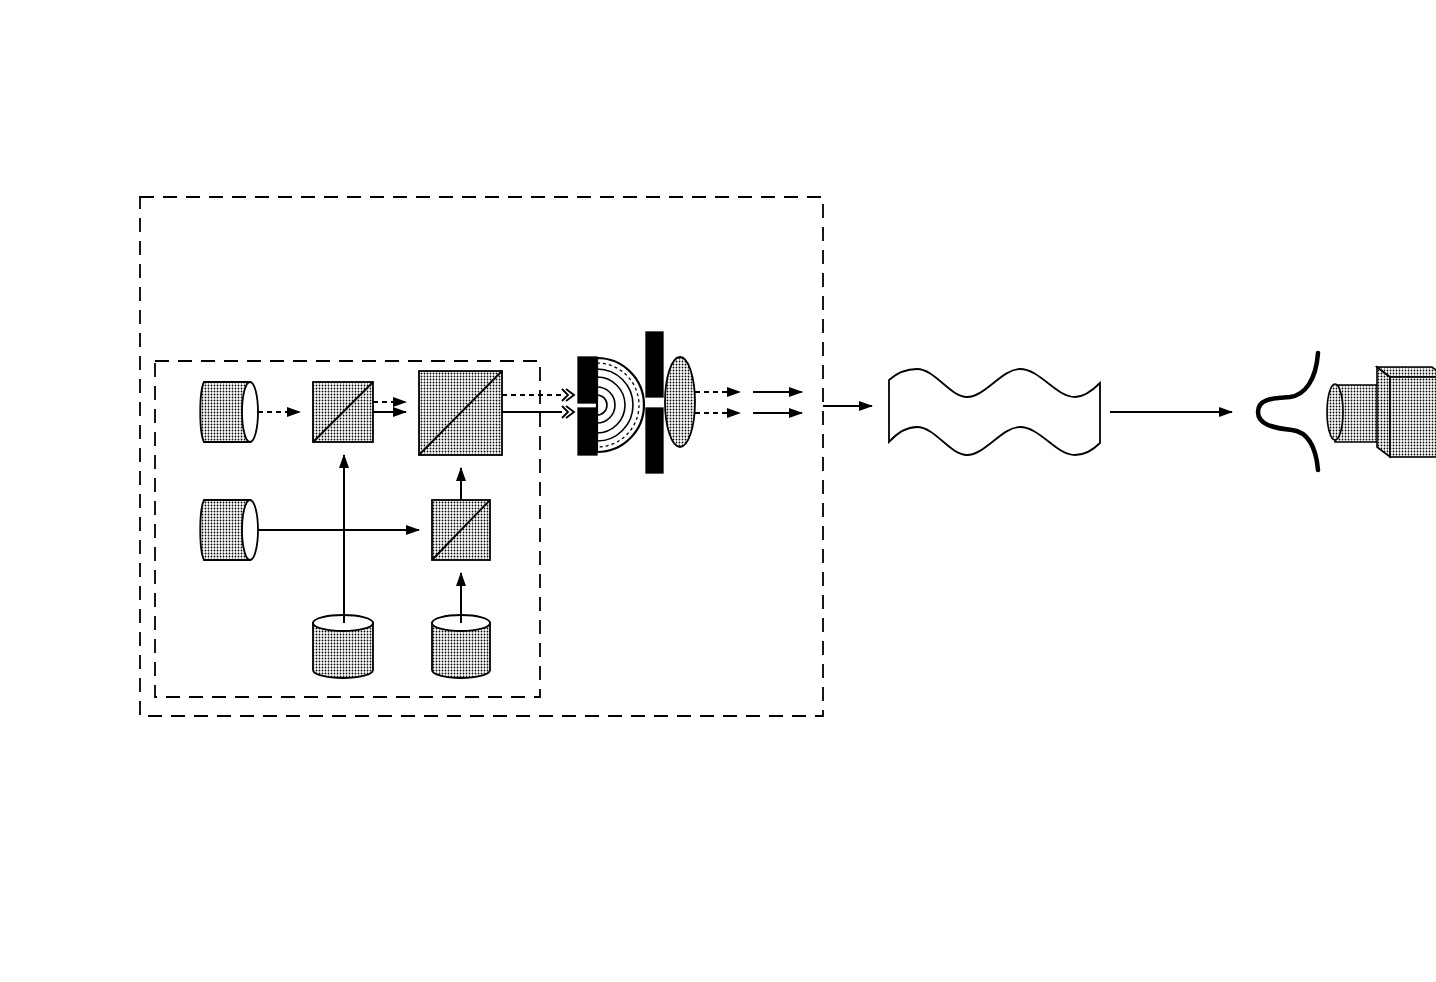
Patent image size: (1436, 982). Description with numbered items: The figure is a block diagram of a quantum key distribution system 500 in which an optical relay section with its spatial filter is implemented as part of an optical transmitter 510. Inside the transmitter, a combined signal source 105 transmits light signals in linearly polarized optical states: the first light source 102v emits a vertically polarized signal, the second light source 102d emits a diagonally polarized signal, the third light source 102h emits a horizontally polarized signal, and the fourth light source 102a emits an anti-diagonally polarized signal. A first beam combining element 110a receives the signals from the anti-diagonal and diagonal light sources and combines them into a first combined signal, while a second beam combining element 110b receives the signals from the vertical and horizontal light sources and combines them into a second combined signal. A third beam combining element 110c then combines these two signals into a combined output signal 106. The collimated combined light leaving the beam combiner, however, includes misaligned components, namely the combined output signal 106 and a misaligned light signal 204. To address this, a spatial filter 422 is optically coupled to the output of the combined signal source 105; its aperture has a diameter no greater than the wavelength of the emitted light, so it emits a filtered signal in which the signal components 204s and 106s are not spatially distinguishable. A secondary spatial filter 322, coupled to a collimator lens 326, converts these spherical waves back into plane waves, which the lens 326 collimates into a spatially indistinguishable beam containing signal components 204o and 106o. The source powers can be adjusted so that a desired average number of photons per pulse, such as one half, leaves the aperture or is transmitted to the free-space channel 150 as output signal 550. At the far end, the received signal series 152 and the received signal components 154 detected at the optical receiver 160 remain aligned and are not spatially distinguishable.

The quantum key distribution system 500 is at (263, 102).
The optical transmitter 510 is at (373, 195).
The combined signal source 105 is at (278, 697).
The fourth light source 102a is at (200, 407).
The third light source 102h is at (200, 537).
The second light source 102d is at (318, 647).
The first light source 102v is at (485, 647).
The first beam combining element 110a is at (320, 382).
The second beam combining element 110b is at (493, 563).
The third beam combining element 110c is at (433, 371).
The light signal 204 is at (555, 385).
The combined output signal 106 is at (563, 420).
The signal component 106s is at (622, 357).
The signal component 204s is at (615, 455).
The spatial filter 422 is at (582, 462).
The secondary spatial filter 322 is at (658, 330).
The collimator lens 326 is at (697, 357).
The signal component 106o is at (802, 388).
The signal component 204o is at (722, 423).
The output signal 550 is at (848, 408).
The free-space channel 150 is at (1015, 368).
The received signal series 152 is at (1153, 405).
The received signal components 154 is at (1287, 430).
The optical receiver 160 is at (1413, 373).